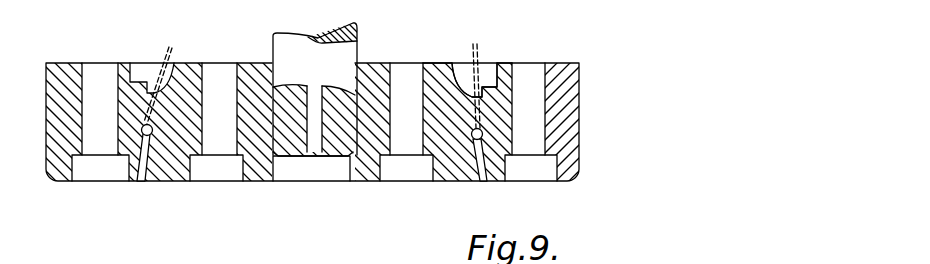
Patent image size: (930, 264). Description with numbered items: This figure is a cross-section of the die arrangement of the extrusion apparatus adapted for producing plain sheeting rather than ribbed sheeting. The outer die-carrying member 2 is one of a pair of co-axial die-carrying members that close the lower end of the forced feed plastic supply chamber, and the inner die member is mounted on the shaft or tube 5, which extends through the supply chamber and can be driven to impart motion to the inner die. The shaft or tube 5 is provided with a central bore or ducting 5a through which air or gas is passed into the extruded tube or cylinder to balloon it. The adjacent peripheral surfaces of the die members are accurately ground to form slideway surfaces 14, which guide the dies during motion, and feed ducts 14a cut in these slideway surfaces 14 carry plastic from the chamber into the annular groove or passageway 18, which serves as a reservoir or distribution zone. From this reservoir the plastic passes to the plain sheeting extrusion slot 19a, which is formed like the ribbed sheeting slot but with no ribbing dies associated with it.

The die-carrying member 2 is at (57, 155).
The shaft or tube 5 is at (287, 57).
The central bore or ducting 5a is at (315, 142).
The slideway surfaces 14 is at (478, 104).
The feed ducts 14a is at (321, 74).
The annular groove or passageway 18 is at (155, 103).
The plain sheeting extrusion slot 19a is at (138, 183).